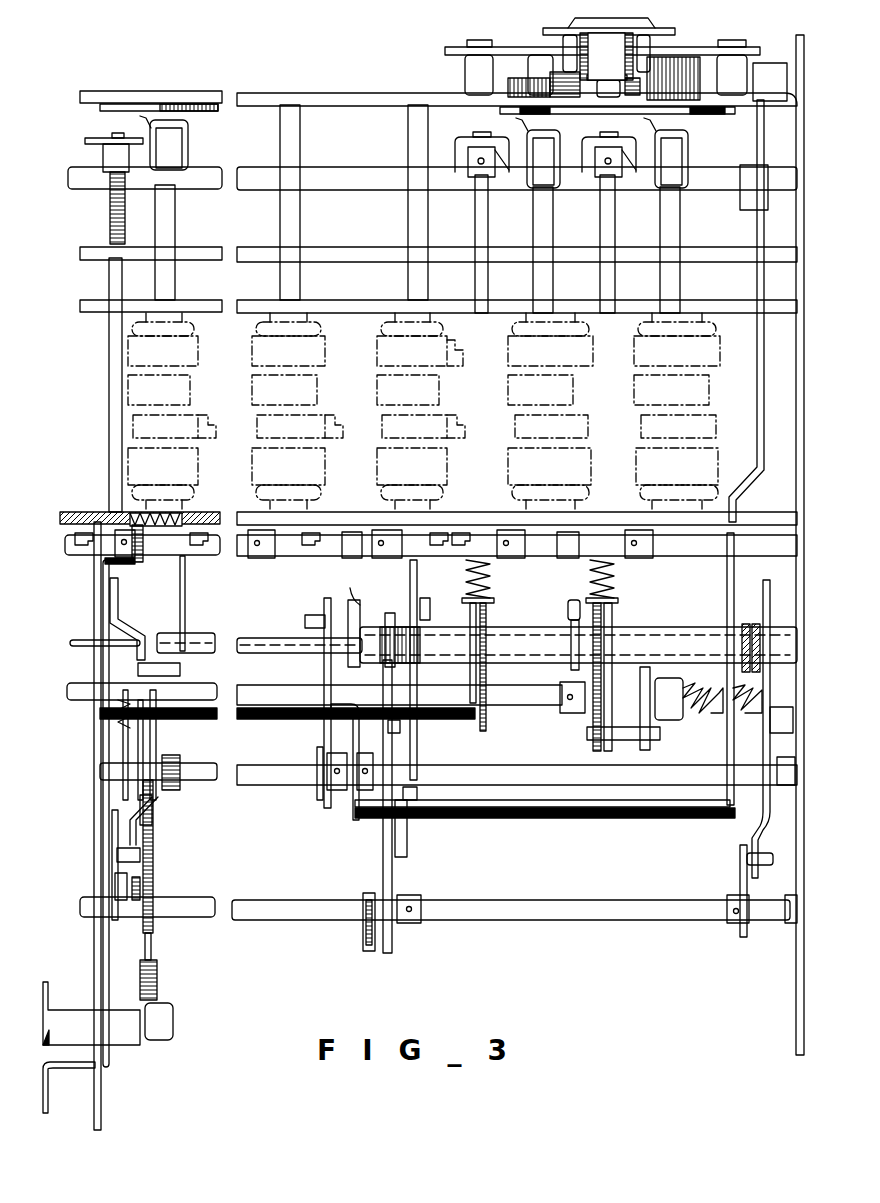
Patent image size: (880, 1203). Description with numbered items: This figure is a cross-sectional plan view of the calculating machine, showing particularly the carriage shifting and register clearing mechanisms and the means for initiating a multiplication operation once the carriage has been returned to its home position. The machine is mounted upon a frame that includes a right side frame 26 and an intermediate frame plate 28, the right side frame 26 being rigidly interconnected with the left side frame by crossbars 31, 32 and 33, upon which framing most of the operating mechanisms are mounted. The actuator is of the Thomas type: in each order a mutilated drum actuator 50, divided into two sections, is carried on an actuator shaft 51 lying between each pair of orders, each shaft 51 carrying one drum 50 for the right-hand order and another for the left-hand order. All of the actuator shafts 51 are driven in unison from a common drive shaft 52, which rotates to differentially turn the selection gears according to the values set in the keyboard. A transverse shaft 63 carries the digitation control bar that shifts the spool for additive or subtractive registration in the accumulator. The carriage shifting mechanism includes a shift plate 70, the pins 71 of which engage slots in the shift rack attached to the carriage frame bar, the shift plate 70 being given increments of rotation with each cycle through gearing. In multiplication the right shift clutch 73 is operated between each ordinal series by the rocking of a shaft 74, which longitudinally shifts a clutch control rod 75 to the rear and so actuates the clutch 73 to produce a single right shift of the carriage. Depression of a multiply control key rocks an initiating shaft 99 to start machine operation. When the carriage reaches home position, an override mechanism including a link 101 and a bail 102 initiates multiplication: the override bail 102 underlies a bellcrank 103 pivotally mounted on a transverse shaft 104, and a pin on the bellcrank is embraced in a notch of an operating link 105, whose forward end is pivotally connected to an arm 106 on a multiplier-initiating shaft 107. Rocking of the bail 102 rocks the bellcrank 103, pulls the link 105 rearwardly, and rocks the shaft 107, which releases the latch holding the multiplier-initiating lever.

The right side frame 26 is at (797, 1016).
The intermediate frame plate 28 is at (94, 947).
The crossbar 31 is at (366, 524).
The crossbar 32 is at (331, 302).
The crossbar 33 is at (350, 101).
The mutilated drum actuator 50 is at (374, 393).
The actuator shaft 51 is at (413, 213).
The drive shaft 52 is at (686, 555).
The transverse shaft 63 is at (331, 178).
The shift plate 70 is at (558, 31).
The pins 71 is at (650, 58).
The right shift clutch 73 is at (703, 144).
The shaft 74 is at (546, 706).
The clutch control rod 75 is at (613, 248).
The initiating shaft 99 is at (281, 901).
The link 101 is at (762, 420).
The override bail 102 is at (575, 827).
The bellcrank 103 is at (166, 760).
The transverse shaft 104 is at (466, 777).
The operating link 105 is at (155, 961).
The arm 106 is at (141, 1001).
The multiplier-initiating shaft 107 is at (121, 1033).